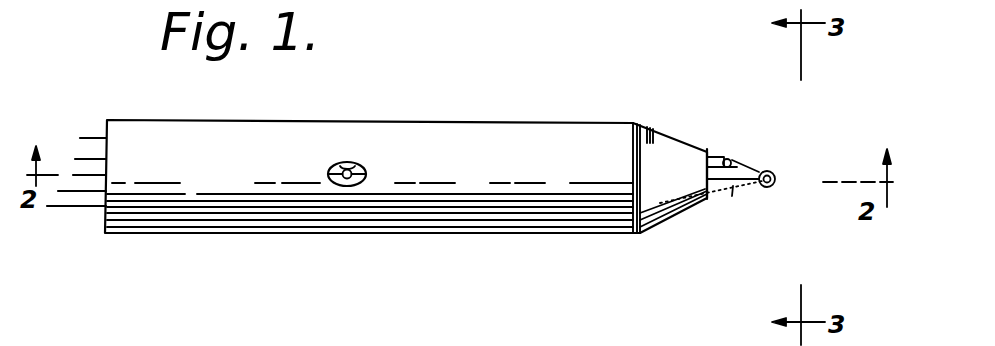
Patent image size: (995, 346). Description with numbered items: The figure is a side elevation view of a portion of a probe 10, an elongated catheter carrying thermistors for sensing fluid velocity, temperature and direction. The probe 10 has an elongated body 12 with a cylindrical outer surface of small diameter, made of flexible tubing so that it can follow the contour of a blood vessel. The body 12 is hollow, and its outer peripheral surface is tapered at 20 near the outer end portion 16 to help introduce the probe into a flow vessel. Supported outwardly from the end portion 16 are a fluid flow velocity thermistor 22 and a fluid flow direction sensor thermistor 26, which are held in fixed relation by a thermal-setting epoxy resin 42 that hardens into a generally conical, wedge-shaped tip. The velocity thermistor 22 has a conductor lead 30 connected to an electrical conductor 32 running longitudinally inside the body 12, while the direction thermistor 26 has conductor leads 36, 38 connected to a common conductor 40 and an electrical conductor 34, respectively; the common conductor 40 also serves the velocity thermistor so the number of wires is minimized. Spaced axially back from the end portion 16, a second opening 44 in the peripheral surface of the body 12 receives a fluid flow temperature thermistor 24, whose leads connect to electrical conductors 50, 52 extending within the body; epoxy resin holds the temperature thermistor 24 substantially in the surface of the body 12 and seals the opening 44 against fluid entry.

The probe 10 is at (524, 108).
The elongated body 12 is at (508, 205).
The outer end portion 16 is at (722, 200).
The tapered portion 20 is at (667, 213).
The fluid flow velocity thermistor 22 is at (775, 172).
The fluid flow temperature thermistor 24 is at (340, 186).
The fluid flow direction sensor thermistor 26 is at (731, 157).
The conductor lead 30 is at (738, 177).
The electrical conductor 32 is at (54, 206).
The electrical conductor 34 is at (90, 138).
The conductor lead 36 is at (707, 169).
The conductor lead 38 is at (717, 152).
The common conductor 40 is at (65, 191).
The epoxy resin tip 42 is at (735, 195).
The second opening 44 is at (357, 164).
The electrical conductor 50 is at (78, 158).
The electrical conductor 52 is at (78, 175).